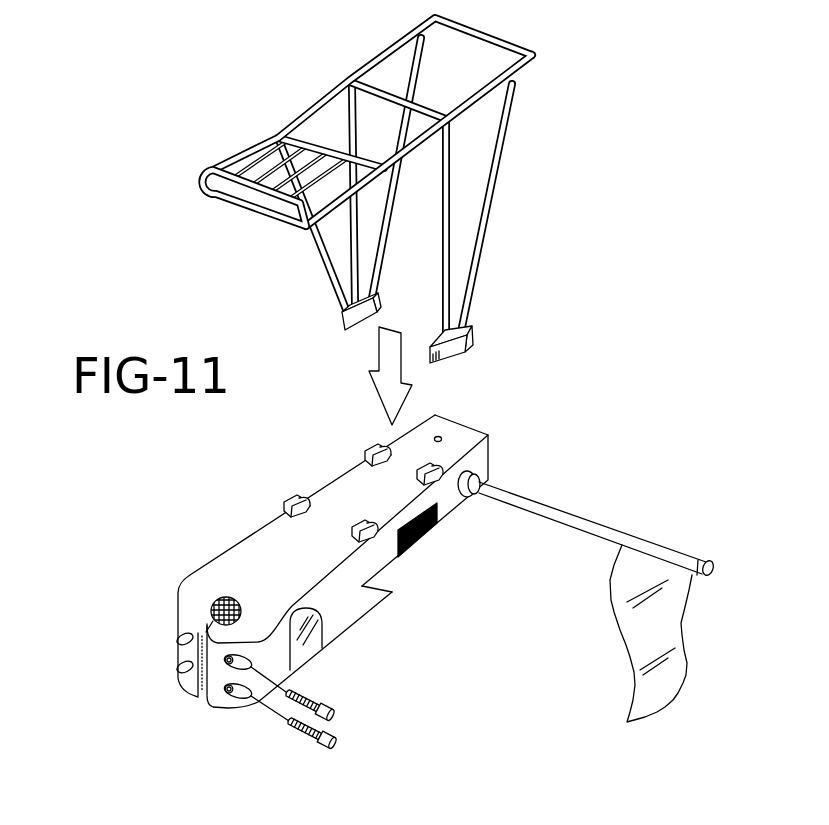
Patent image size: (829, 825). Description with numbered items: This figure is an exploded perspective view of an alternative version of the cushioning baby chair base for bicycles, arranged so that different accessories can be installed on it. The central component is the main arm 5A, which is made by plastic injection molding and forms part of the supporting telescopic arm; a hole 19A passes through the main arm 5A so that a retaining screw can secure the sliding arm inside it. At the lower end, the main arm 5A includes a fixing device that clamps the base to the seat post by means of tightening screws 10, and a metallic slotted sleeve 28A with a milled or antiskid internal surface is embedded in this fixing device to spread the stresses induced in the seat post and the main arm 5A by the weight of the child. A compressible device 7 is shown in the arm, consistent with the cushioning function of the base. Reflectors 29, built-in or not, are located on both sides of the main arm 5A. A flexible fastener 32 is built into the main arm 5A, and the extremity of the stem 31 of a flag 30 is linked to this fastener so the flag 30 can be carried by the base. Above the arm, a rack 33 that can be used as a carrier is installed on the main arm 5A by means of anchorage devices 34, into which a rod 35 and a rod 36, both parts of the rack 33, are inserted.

The rack 33 is at (528, 229).
The rod 35 is at (350, 83).
The rod 36 is at (276, 138).
The main arm 5A is at (366, 592).
The hole 19A is at (441, 437).
The anchorage devices 34 is at (364, 523).
The flexible fastener 32 is at (473, 480).
The stem 31 is at (565, 515).
The reflectors 29 is at (437, 527).
The flag 30 is at (625, 613).
The metallic slotted sleeve 28A is at (210, 608).
The compressible device 7 is at (323, 645).
The tightening screws 10 is at (303, 735).